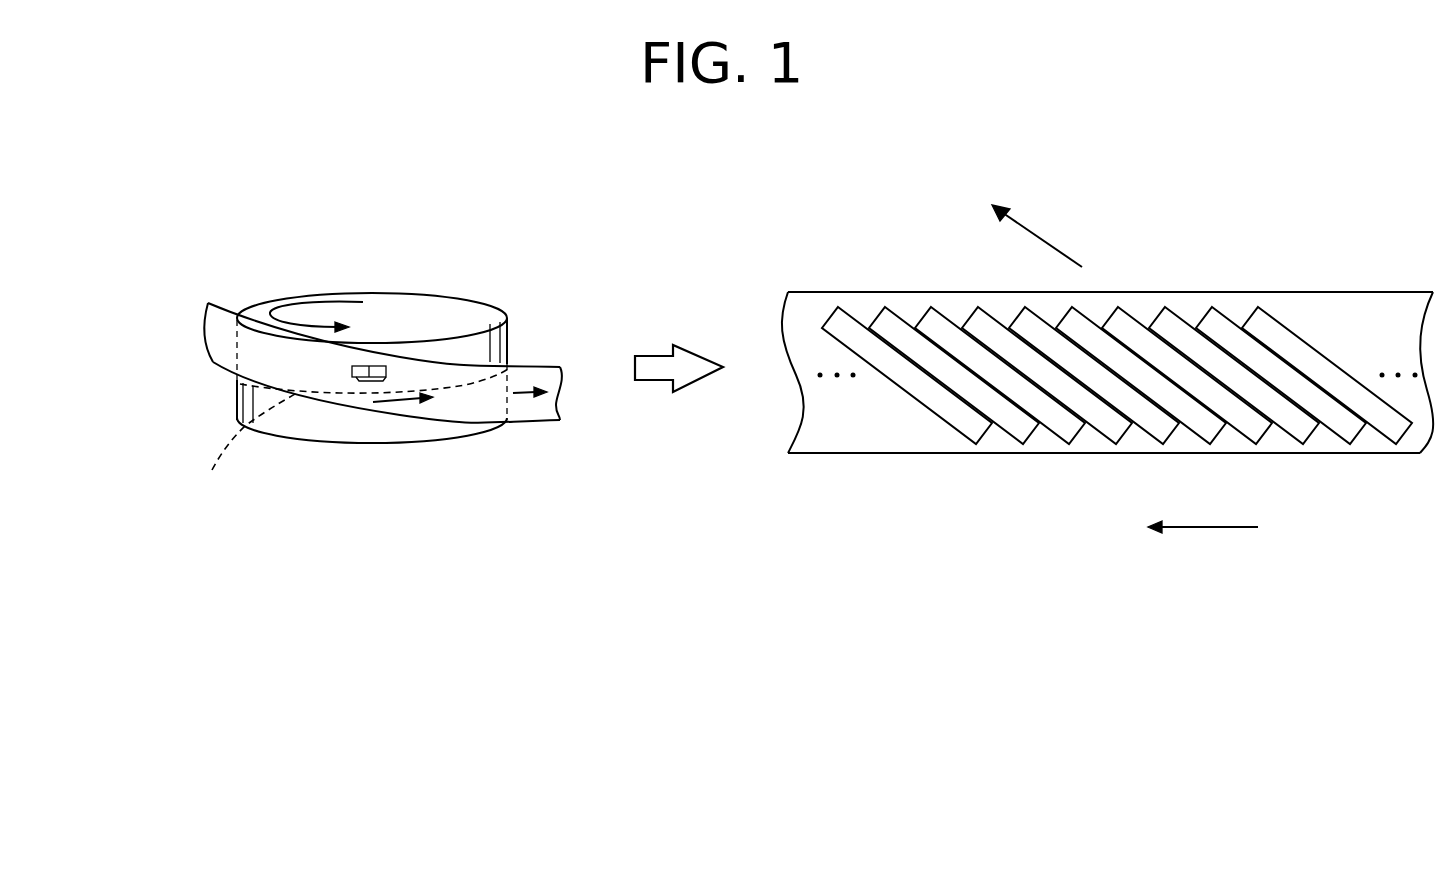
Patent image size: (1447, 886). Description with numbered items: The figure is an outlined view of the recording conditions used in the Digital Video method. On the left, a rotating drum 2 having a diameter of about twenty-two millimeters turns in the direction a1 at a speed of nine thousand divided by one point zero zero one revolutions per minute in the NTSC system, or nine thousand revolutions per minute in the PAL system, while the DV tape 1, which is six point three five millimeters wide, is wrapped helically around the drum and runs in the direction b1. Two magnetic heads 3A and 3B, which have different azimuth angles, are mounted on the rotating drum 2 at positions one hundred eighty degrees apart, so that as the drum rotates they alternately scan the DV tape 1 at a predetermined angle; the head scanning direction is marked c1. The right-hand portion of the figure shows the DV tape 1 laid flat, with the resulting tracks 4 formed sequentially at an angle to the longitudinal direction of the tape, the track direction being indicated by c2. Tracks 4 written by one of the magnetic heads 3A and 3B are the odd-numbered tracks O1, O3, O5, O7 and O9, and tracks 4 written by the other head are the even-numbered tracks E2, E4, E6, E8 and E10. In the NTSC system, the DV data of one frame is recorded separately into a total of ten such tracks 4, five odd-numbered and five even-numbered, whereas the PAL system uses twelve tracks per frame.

The DV tape 1 is at (227, 343).
The rotating drum 2 is at (427, 310).
The magnetic head 3A is at (334, 451).
The magnetic head 3B is at (360, 378).
The tracks 4 is at (806, 356).
The rotating direction of the drum a1 is at (330, 290).
The running direction of the tape b1 is at (513, 410).
The head scanning direction c1 is at (407, 403).
The track direction c2 is at (1037, 236).
The odd-numbered track O1 is at (907, 375).
The even-numbered track E2 is at (954, 375).
The odd-numbered track O3 is at (1000, 375).
The even-numbered track E4 is at (1047, 375).
The odd-numbered track O5 is at (1094, 375).
The even-numbered track E6 is at (1141, 375).
The odd-numbered track O7 is at (1187, 375).
The even-numbered track E8 is at (1234, 375).
The odd-numbered track O9 is at (1281, 375).
The even-numbered track E10 is at (1327, 375).